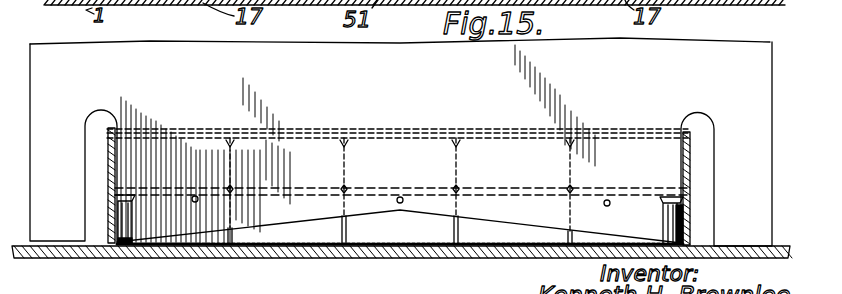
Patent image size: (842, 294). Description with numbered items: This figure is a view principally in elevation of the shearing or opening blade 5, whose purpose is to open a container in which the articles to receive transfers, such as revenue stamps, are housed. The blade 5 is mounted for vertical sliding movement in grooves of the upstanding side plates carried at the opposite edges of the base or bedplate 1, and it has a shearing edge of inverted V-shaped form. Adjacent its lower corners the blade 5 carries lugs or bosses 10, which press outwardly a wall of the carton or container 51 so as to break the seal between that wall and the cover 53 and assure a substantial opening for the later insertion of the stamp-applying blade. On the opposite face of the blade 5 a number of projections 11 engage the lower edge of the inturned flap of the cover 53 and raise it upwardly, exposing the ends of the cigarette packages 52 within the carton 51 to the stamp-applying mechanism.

The base or bedplate 1 is at (417, 251).
The shearing or opening blade 5 is at (403, 85).
The lugs or bosses 10 is at (125, 244).
The projections 11 is at (195, 196).
The carton or container 51 is at (377, 245).
The cigarette packages 52 is at (367, 134).
The cover 53 is at (642, 114).